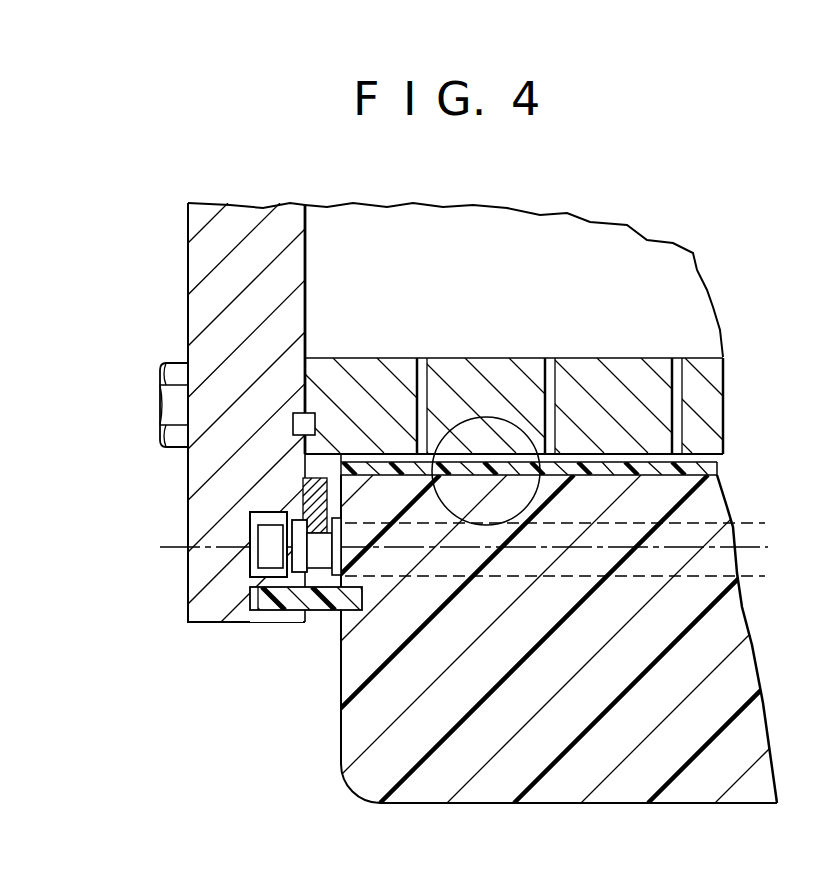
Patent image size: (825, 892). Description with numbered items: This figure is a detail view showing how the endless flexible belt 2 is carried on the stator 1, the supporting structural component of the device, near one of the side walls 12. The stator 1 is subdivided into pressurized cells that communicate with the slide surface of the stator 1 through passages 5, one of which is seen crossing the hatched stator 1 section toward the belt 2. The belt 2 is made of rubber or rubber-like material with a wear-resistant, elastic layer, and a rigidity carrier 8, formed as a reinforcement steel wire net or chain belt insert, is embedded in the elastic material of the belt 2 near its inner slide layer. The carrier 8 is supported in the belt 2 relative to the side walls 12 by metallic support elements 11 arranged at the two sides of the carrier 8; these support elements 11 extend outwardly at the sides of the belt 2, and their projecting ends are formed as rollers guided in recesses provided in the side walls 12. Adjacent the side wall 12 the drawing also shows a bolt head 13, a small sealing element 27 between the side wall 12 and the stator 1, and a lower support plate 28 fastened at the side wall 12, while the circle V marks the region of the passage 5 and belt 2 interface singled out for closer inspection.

The stator 1 is at (467, 363).
The endless flexible belt 2 is at (555, 783).
The passages 5 is at (547, 362).
The rigidity carrier 8 is at (668, 611).
The support elements 11 is at (322, 557).
The side walls 12 is at (205, 312).
The bolt head 13 is at (268, 558).
The seal 27 is at (296, 420).
The support plate 28 is at (287, 598).
The detail circle V is at (491, 421).